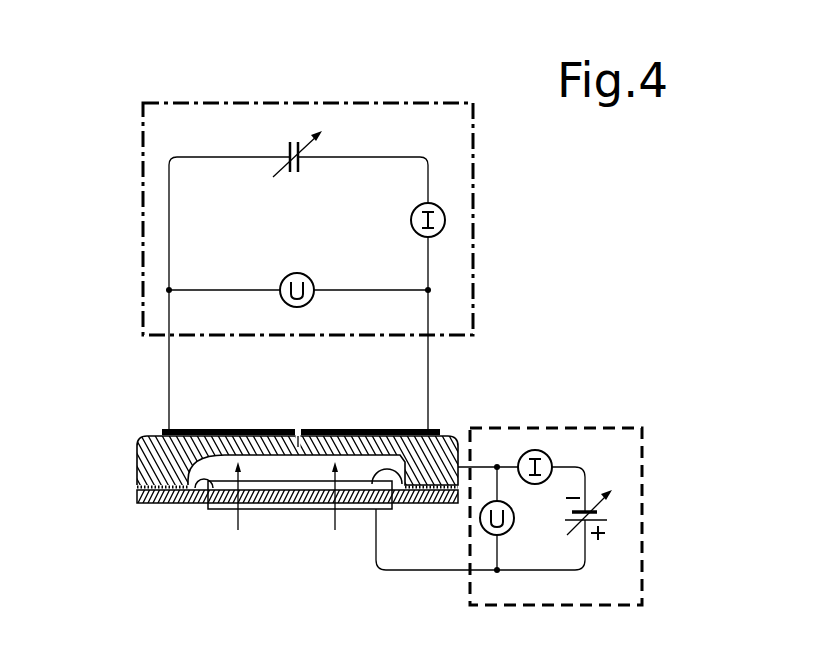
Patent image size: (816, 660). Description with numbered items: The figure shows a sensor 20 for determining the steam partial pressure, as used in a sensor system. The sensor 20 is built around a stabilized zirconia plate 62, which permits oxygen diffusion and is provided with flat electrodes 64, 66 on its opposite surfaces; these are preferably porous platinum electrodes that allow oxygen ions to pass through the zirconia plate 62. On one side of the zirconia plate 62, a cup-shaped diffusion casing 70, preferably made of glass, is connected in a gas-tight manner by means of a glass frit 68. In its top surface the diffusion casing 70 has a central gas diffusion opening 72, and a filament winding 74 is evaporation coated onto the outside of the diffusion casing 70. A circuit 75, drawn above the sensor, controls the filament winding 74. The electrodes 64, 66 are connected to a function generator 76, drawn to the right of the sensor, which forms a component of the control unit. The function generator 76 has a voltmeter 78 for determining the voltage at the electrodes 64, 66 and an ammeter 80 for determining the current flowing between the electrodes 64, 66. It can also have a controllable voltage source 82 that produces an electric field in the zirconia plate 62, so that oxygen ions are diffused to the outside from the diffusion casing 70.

The sensor 20 is at (293, 459).
The stabilized zirconia plate 62 is at (137, 503).
The flat electrode 64 is at (218, 509).
The flat electrode 66 is at (196, 493).
The glass frit 68 is at (137, 487).
The diffusion casing 70 is at (137, 446).
The gas diffusion opening 72 is at (298, 440).
The filament winding 74 is at (249, 428).
The circuit 75 is at (372, 155).
The function generator 76 is at (539, 497).
The voltmeter 78 is at (485, 525).
The ammeter 80 is at (548, 455).
The controllable voltage source 82 is at (602, 508).